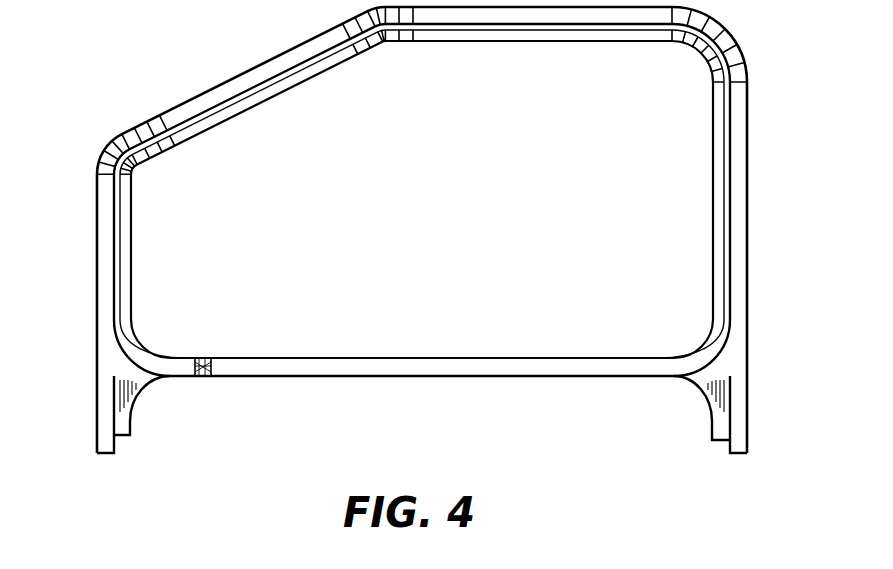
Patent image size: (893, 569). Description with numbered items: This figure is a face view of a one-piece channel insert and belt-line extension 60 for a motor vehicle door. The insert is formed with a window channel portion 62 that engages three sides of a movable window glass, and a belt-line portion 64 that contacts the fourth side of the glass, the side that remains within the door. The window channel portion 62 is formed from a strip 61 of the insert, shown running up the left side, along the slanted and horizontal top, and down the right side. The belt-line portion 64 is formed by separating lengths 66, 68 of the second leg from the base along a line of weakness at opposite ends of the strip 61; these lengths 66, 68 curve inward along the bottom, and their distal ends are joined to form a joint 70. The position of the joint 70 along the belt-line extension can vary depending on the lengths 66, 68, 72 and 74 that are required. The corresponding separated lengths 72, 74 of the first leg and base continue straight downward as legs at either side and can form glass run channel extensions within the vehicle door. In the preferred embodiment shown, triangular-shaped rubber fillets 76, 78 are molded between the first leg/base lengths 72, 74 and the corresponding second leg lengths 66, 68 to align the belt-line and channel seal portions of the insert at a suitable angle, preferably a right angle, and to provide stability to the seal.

The one-piece channel insert and belt-line extension 60 is at (131, 119).
The strip 61 is at (203, 68).
The window channel portion 62 is at (292, 60).
The belt-line portion 64 is at (273, 376).
The length of second leg 66 is at (138, 342).
The length of second leg 68 is at (608, 360).
The joint 70 is at (206, 358).
The separated length of first leg and base 72 is at (102, 412).
The separated length of first leg and base 74 is at (740, 388).
The triangular-shaped rubber fillet 76 is at (135, 402).
The triangular-shaped rubber fillet 78 is at (707, 397).